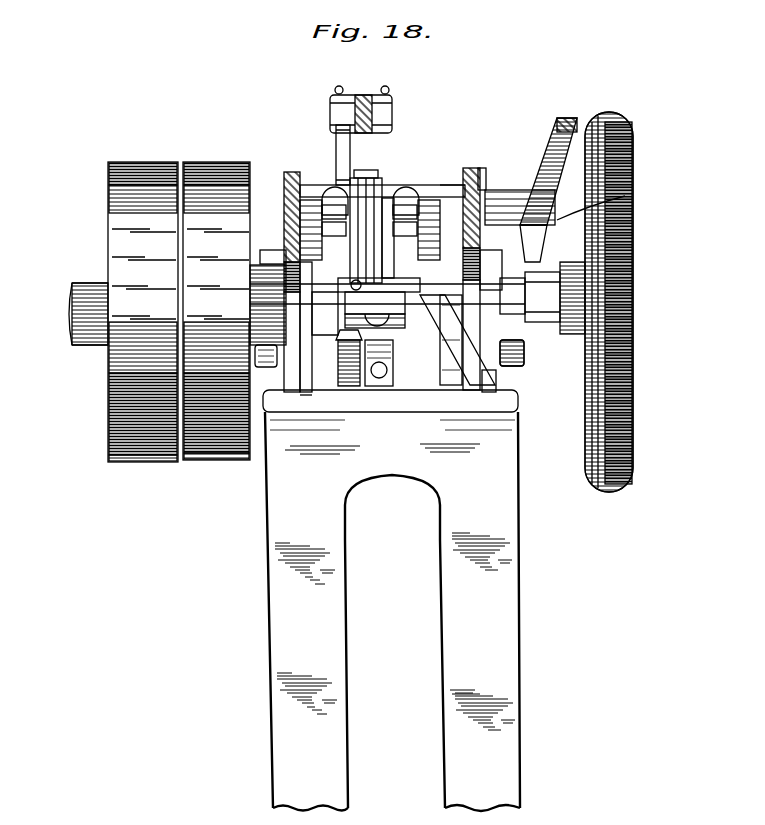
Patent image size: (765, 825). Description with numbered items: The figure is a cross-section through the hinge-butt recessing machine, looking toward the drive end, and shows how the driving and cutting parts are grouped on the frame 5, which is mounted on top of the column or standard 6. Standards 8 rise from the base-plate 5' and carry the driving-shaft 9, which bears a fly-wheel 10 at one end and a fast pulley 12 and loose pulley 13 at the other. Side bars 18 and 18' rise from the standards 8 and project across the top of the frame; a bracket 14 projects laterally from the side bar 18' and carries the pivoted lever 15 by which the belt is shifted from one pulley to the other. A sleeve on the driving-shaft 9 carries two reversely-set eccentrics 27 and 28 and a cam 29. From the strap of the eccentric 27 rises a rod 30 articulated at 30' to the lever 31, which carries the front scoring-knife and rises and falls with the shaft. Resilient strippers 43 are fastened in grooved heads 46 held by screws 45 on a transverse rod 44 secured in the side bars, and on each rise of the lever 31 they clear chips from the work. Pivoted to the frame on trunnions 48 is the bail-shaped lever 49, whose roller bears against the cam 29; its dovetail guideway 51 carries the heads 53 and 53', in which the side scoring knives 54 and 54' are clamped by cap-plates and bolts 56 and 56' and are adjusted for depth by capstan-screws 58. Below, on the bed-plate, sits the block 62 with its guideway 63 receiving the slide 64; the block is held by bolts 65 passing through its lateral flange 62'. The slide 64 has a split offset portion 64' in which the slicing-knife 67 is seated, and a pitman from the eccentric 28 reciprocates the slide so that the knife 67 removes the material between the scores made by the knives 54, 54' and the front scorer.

The frame 5 is at (314, 329).
The base-plate 5' is at (348, 387).
The column or standard 6 is at (280, 658).
The standards 8 is at (305, 400).
The driving-shaft 9 is at (552, 320).
The fly-wheel 10 is at (630, 408).
The fast pulley 12 is at (210, 166).
The loose pulley 13 is at (148, 166).
The bracket 14 is at (603, 203).
The lever 15 is at (568, 117).
The side bar 18 is at (270, 246).
The side bar 18' is at (520, 194).
The eccentric 27 is at (330, 396).
The eccentric 28 is at (376, 392).
The cam 29 is at (528, 252).
The rod 30 is at (328, 155).
The articulation 30' is at (341, 109).
The lever 31 is at (362, 100).
The resilient strippers 43 is at (395, 215).
The rod or shaft 44 is at (482, 168).
The screws 45 is at (360, 180).
The heads 46 is at (368, 172).
The trunnions 48 is at (220, 440).
The lever 49 is at (290, 298).
The tongue or guideway 51 is at (478, 270).
The head 53 is at (277, 280).
The head 53' is at (462, 256).
The side scoring knife 54 is at (382, 178).
The side scoring knife 54' is at (453, 167).
The bolt 56 is at (289, 228).
The bolt 56' is at (437, 230).
The capstan-screw 58 is at (330, 190).
The block 62 is at (388, 370).
The lateral flange 62' is at (473, 371).
The guideway 63 is at (445, 385).
The slide 64 is at (376, 386).
The lateral offset portion 64' is at (533, 356).
The bolts 65 is at (438, 432).
The slicing-knife 67 is at (280, 360).